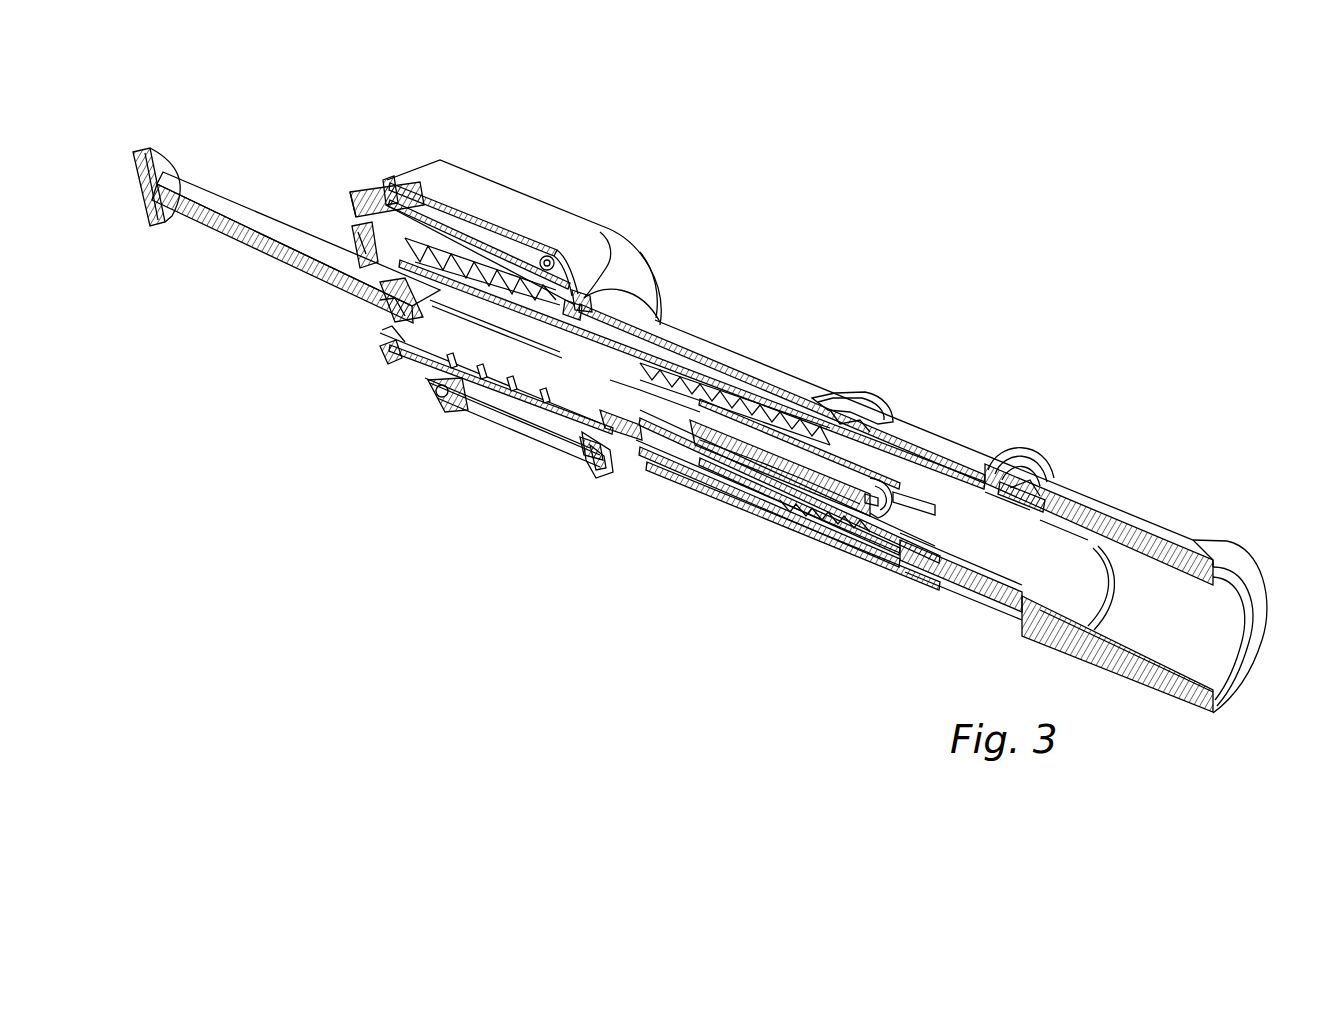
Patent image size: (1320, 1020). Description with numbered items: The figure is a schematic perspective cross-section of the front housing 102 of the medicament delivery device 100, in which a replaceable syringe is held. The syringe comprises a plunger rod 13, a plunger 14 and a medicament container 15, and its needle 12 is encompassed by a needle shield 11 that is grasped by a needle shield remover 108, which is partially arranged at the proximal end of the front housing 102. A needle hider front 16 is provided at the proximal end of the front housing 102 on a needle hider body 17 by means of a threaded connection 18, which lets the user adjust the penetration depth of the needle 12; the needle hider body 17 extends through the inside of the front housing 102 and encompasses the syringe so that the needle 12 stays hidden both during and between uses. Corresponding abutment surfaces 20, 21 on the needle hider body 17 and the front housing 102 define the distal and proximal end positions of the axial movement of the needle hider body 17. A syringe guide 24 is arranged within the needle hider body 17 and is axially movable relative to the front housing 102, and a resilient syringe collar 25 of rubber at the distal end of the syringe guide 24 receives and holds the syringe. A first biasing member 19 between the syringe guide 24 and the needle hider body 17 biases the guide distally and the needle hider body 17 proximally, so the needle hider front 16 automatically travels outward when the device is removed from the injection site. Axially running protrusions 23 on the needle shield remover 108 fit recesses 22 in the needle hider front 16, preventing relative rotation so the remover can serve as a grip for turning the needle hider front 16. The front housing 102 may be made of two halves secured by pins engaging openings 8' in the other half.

The medicament delivery device 100 is at (853, 228).
The front housing 102 is at (551, 220).
The needle shield remover 108 is at (1113, 678).
The needle shield 11 is at (843, 482).
The needle 12 is at (746, 476).
The plunger rod 13 is at (237, 210).
The plunger 14 is at (389, 356).
The medicament container 15 is at (633, 400).
The needle hider front 16 is at (967, 460).
The needle hider body 17 is at (444, 232).
The threaded connection 18 is at (893, 420).
The first biasing member 19 is at (516, 393).
The abutment surface 20 is at (653, 326).
The abutment surface 21 is at (588, 296).
The recesses 22 is at (1038, 472).
The axially running protrusions 23 is at (1057, 497).
The syringe guide 24 is at (458, 265).
The resilient syringe collar 25 is at (351, 240).
The openings 8' is at (391, 301).